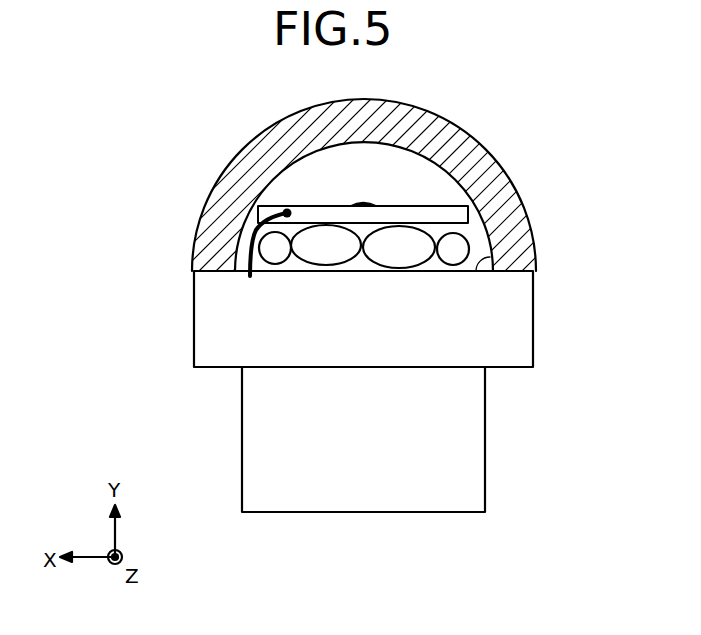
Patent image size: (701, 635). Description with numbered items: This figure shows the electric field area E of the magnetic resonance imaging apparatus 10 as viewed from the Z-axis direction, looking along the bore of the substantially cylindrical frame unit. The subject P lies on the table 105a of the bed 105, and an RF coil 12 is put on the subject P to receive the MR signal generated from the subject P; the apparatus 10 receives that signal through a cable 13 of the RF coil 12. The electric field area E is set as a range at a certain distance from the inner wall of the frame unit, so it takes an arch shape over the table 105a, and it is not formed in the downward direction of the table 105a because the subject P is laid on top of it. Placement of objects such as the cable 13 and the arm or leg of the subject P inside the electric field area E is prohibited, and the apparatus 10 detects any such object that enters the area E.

The magnetic resonance imaging apparatus 10 is at (537, 168).
The RF coil 12 is at (398, 205).
The cable 13 is at (246, 229).
The bed 105 is at (472, 459).
The table 105a is at (493, 243).
The subject P is at (353, 221).
The electric field area E is at (195, 246).